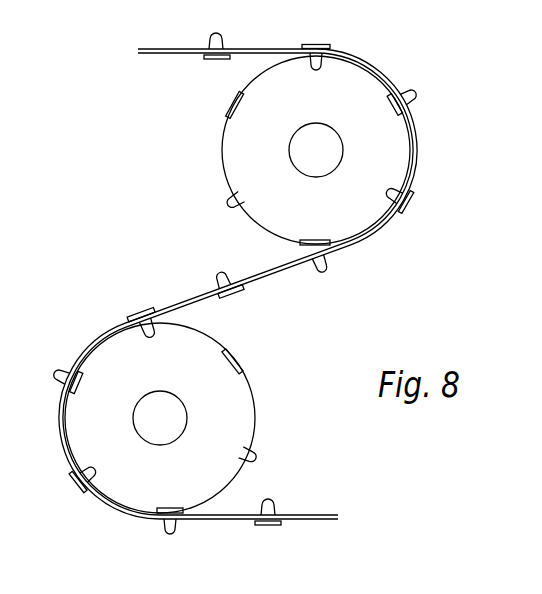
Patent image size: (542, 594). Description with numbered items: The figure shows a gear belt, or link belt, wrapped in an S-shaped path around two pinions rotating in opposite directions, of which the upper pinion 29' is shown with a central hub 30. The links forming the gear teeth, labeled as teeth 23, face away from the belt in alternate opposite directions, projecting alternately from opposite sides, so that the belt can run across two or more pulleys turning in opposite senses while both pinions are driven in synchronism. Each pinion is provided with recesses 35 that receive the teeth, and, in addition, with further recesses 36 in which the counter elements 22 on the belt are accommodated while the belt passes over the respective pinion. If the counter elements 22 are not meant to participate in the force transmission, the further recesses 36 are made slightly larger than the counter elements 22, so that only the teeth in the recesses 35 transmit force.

The counter element 22 is at (141, 311).
The belt cleat 23 is at (211, 43).
The pinion 29' is at (345, 150).
The roller hub 30 is at (322, 135).
The recess 35 is at (238, 200).
The further recess 36 is at (233, 103).